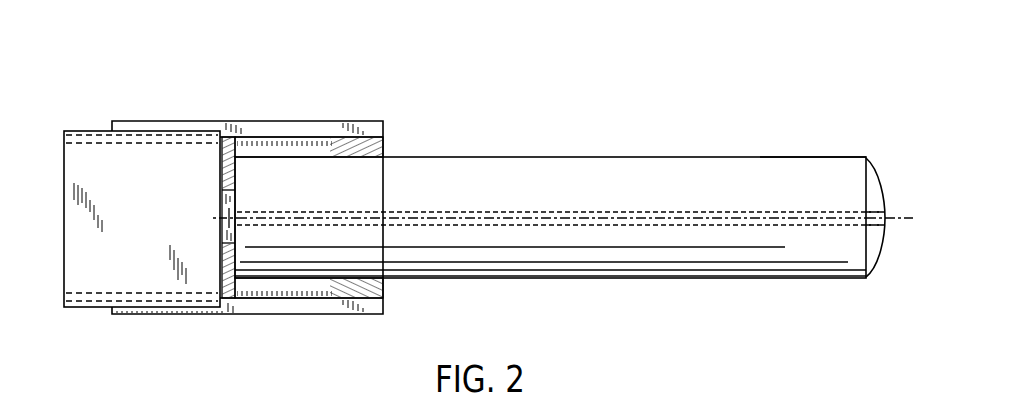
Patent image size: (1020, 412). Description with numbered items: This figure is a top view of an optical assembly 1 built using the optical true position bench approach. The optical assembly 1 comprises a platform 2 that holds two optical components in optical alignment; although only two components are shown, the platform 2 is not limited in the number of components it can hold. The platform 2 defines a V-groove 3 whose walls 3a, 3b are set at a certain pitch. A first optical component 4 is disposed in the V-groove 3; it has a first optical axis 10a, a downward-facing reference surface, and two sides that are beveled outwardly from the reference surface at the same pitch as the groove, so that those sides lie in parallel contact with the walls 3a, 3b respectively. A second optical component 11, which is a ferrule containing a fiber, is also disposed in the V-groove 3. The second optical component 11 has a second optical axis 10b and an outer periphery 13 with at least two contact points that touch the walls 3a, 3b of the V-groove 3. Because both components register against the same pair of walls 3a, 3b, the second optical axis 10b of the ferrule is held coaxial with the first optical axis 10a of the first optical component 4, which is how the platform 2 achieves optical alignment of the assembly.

The optical assembly 1 is at (676, 70).
The platform 2 is at (353, 316).
The V-groove 3 is at (268, 290).
The wall 3a is at (374, 288).
The wall 3b is at (373, 148).
The first optical component 4 is at (81, 114).
The first optical axis 10a is at (232, 213).
The second optical axis 10b is at (903, 210).
The second optical component 11 is at (573, 154).
The outer periphery 13 is at (790, 156).